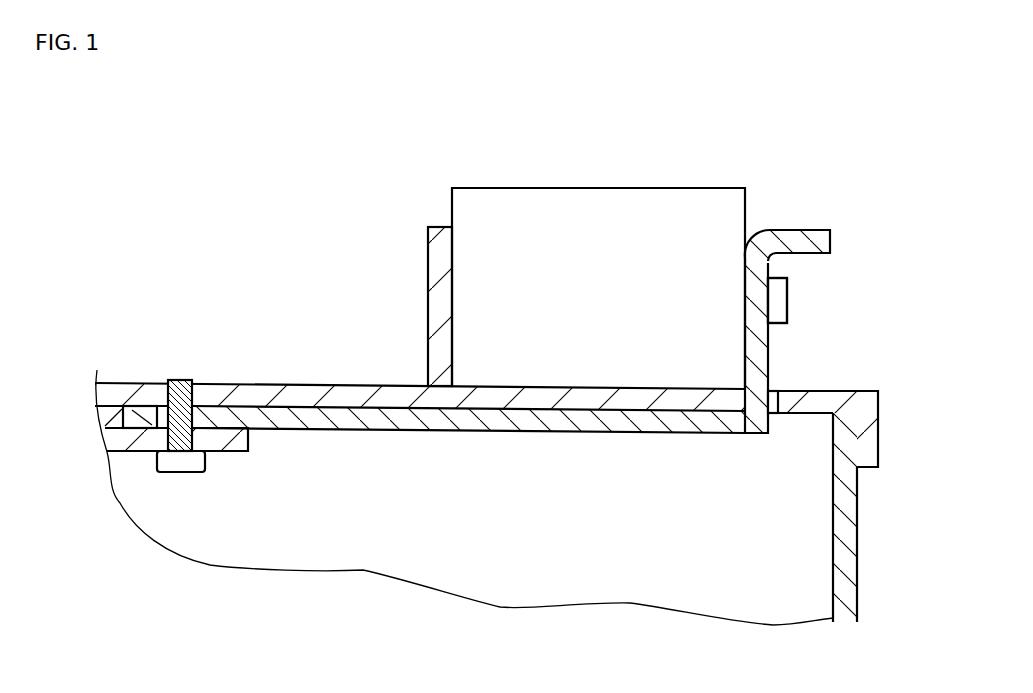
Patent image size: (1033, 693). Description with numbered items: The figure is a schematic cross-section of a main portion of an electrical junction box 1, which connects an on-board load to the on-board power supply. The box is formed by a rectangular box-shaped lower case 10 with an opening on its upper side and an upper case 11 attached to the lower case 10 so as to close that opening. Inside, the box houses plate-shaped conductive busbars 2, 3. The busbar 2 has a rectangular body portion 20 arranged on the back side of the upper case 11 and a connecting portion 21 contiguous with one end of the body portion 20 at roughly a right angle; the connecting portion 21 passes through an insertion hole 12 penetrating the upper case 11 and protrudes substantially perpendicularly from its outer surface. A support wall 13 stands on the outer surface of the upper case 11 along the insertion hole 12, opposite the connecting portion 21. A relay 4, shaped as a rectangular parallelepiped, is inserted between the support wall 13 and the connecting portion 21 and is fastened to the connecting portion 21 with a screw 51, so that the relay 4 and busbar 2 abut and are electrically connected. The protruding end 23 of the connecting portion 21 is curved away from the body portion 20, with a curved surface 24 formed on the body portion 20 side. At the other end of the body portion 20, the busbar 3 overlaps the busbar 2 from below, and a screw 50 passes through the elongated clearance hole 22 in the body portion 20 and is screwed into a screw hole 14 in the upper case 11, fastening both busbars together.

The electrical junction box 1 is at (172, 105).
The busbar 2 is at (642, 449).
The busbar 3 is at (233, 446).
The relay 4 is at (562, 202).
The lower case 10 is at (847, 505).
The upper case 11 is at (872, 390).
The insertion hole 12 is at (769, 389).
The support wall 13 is at (437, 260).
The screw hole 14 is at (177, 380).
The body portion 20 is at (353, 414).
The connecting portion 21 is at (764, 350).
The elongated hole 22 is at (198, 407).
The protruding end 23 is at (807, 235).
The curved surface 24 is at (763, 233).
The screw 50 is at (181, 472).
The screw 51 is at (786, 293).